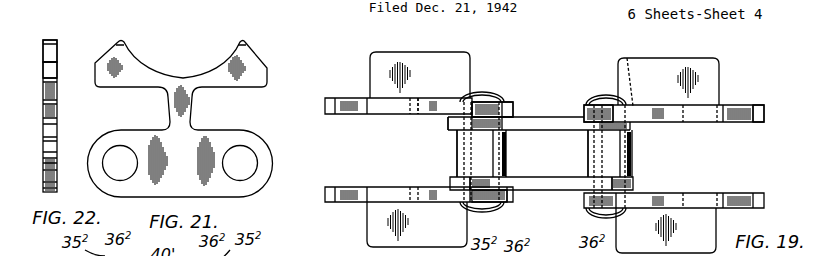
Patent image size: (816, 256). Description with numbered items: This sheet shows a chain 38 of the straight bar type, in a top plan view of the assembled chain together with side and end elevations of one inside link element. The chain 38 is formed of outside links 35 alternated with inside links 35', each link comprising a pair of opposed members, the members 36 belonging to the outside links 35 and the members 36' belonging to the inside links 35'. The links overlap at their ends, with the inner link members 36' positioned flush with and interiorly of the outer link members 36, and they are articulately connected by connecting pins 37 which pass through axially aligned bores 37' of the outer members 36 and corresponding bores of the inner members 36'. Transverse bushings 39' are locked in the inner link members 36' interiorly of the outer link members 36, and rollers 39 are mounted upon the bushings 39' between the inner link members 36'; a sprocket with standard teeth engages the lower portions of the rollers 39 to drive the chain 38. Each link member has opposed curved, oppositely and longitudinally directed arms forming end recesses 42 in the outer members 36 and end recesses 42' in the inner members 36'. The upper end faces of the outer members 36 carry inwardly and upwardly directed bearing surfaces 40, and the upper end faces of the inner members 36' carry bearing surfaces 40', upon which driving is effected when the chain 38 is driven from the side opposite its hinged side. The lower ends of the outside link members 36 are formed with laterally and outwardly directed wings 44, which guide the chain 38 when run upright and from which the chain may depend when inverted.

In FIG. 19, the outside link 35 is at (544, 153).
In FIG. 19, the inside link 35' is at (539, 132).
In FIG. 19, the outside link member 36 is at (544, 150).
In FIG. 22, the inside link member 36' is at (66, 42).
In FIG. 21, the inside link member 36' is at (187, 75).
In FIG. 19, the inside link member 36' is at (508, 156).
In FIG. 19, the connecting pin 37 is at (545, 155).
In FIG. 19, the bore of outside link member 37' is at (580, 127).
In FIG. 19, the chain 38 is at (765, 100).
In FIG. 19, the roller 39 is at (573, 161).
In FIG. 19, the transverse bushing 39' is at (572, 153).
In FIG. 19, the bearing surface of outside link member 40 is at (454, 156).
In FIG. 22, the bearing surface of inside link member 40' is at (65, 63).
In FIG. 21, the bearing surface of inside link member 40' is at (192, 110).
In FIG. 19, the bearing surface of inside link member 40' is at (545, 151).
In FIG. 19, the end recess of outside link member 42 is at (544, 153).
In FIG. 22, the end recess of inside link member 42' is at (67, 100).
In FIG. 21, the end recess of inside link member 42' is at (176, 120).
In FIG. 19, the end recess of inside link member 42' is at (478, 101).
In FIG. 19, the wing 44 is at (424, 61).